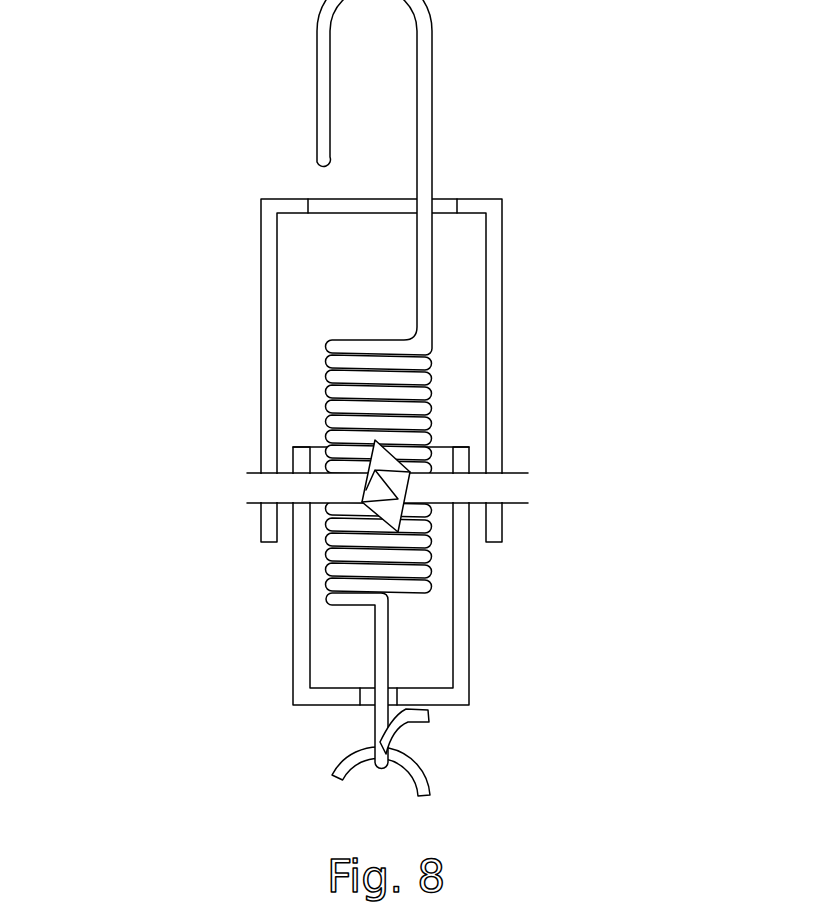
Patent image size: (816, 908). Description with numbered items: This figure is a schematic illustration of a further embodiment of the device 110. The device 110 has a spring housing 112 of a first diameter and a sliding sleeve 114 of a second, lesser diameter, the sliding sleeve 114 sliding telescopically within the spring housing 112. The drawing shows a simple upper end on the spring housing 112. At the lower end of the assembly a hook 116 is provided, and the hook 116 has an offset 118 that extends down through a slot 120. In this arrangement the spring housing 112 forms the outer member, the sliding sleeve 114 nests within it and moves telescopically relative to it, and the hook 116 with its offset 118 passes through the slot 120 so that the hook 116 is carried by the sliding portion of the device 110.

The device 110 is at (390, 404).
The spring housing 112 is at (265, 330).
The sliding sleeve 114 is at (263, 576).
The hook 116 is at (377, 748).
The offset 118 is at (410, 723).
The slot 120 is at (360, 688).